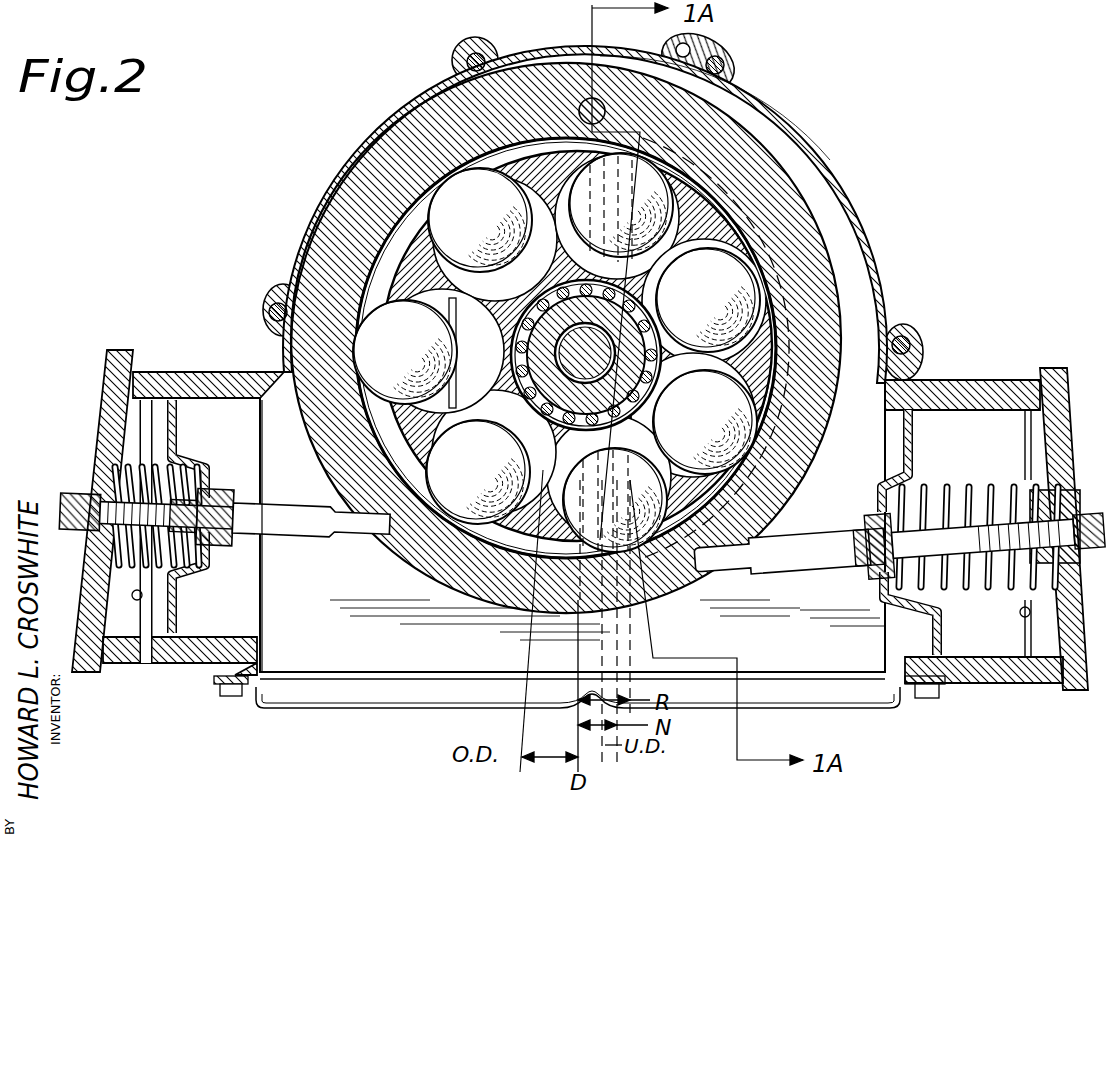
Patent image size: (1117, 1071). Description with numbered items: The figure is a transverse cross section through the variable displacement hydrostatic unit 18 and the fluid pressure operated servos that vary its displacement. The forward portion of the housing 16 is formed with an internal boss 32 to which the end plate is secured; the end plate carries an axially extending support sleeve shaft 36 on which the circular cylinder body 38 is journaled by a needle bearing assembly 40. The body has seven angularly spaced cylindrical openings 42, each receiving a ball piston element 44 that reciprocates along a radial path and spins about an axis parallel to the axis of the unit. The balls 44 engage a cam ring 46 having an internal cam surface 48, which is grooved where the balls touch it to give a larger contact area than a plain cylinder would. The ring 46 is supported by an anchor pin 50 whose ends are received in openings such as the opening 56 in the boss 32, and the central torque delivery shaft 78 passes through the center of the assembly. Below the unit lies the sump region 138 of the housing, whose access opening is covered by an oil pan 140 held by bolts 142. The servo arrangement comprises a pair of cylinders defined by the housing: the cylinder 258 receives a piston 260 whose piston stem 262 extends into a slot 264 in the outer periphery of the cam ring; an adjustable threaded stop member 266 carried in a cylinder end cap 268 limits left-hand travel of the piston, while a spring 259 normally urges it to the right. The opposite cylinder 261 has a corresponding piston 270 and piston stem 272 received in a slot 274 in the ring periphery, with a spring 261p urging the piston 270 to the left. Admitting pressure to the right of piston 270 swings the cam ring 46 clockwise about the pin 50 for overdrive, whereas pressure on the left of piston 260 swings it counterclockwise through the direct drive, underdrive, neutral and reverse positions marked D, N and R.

The housing 16 is at (807, 133).
The hydrostatic unit 18 is at (677, 168).
The internal boss 32 is at (548, 338).
The support sleeve shaft 36 is at (660, 400).
The cylinder body 38 is at (685, 300).
The needle bearing assembly 40 is at (610, 300).
The cylindrical openings 42 is at (670, 203).
The ball piston element 44 is at (633, 343).
The cam ring 46 is at (690, 100).
The internal cam surface 48 is at (720, 208).
The anchor pin 50 is at (590, 66).
The opening 56 is at (600, 98).
The central torque delivery shaft 78 is at (500, 350).
The sump region 138 is at (868, 668).
The oil pan 140 is at (325, 703).
The bolts 142 is at (232, 700).
The cylinder 258 is at (232, 384).
The spring 259 is at (185, 562).
The piston 260 is at (185, 438).
The cylinder 261 is at (1000, 360).
The spring 261p is at (962, 588).
The piston stem 262 is at (225, 517).
The slot 264 is at (345, 490).
The adjustable threaded stop member 266 is at (217, 499).
The cylinder end cap 268 is at (112, 406).
The piston 270 is at (915, 440).
The piston stem 272 is at (900, 540).
The slot 274 is at (798, 540).